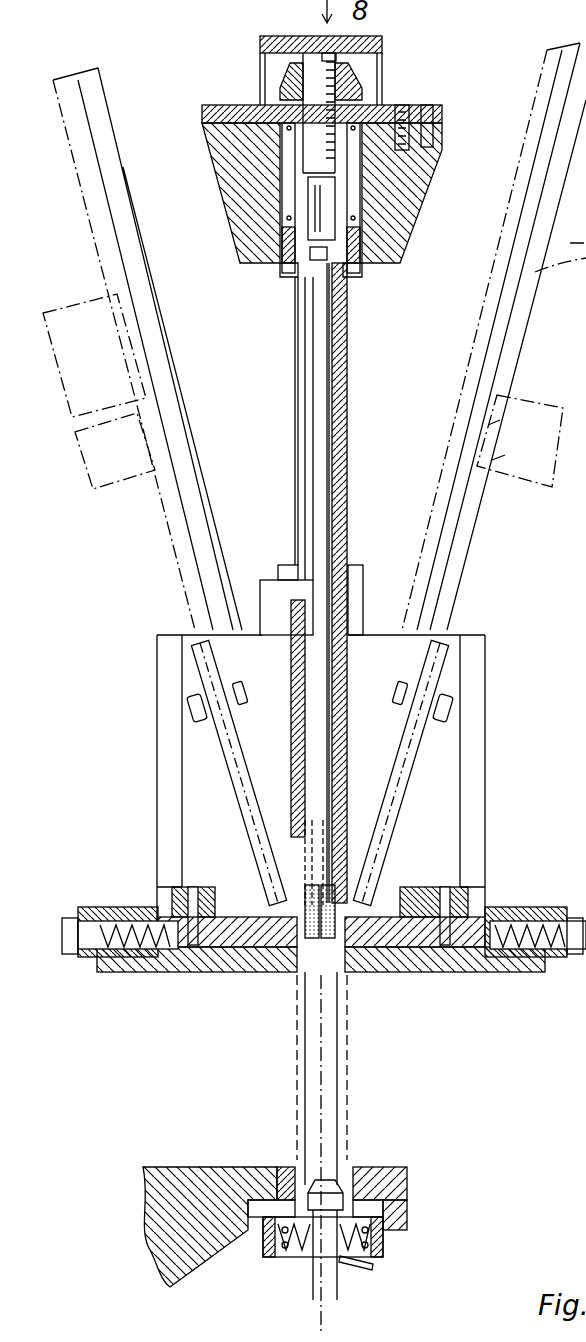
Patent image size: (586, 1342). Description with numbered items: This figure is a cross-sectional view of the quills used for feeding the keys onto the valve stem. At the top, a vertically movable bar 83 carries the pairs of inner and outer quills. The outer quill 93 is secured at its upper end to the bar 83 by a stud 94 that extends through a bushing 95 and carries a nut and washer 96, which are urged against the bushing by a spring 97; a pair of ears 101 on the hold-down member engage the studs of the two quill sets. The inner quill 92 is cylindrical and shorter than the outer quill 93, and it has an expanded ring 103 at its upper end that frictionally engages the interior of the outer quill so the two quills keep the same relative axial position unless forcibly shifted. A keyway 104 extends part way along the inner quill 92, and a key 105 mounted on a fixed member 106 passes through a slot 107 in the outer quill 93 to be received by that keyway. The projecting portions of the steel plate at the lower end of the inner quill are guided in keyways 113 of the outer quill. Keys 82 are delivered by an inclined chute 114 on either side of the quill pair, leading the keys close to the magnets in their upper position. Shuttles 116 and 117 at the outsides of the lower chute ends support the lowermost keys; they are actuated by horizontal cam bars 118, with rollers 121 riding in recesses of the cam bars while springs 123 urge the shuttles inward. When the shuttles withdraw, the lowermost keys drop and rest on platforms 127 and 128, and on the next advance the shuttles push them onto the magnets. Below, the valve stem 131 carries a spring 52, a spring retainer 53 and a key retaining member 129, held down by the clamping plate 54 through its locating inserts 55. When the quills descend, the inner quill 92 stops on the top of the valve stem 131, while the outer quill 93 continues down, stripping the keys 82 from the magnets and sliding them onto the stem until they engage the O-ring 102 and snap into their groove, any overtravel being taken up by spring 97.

The spring 52 is at (280, 1252).
The spring retainer 53 is at (390, 1243).
The clamping plate 54 is at (160, 1210).
The locating insert 55 is at (370, 1163).
The key 82 is at (273, 842).
The bar 83 is at (203, 113).
The inner quill 92 is at (340, 408).
The outer quill 93 is at (347, 485).
The stud 94 is at (300, 100).
The bushing 95 is at (282, 97).
The nut and washer 96 is at (348, 55).
The spring 97 is at (353, 220).
The ear 101 is at (291, 42).
The O-ring 102 is at (313, 1243).
The expanded ring 103 is at (332, 257).
The keyway 104 is at (313, 375).
The key 105 is at (262, 598).
The fixed member 106 is at (375, 640).
The slot 107 is at (298, 410).
The keyway 113 is at (352, 803).
The inclined chute 114 is at (180, 360).
The shuttle 116 is at (243, 970).
The shuttle 117 is at (420, 970).
The cam bar 118 is at (240, 885).
The roller 121 is at (470, 893).
The spring 123 is at (162, 973).
The platform 127 is at (277, 967).
The platform 128 is at (392, 972).
The key retaining member 129 is at (300, 1190).
The valve stem 131 is at (360, 1270).